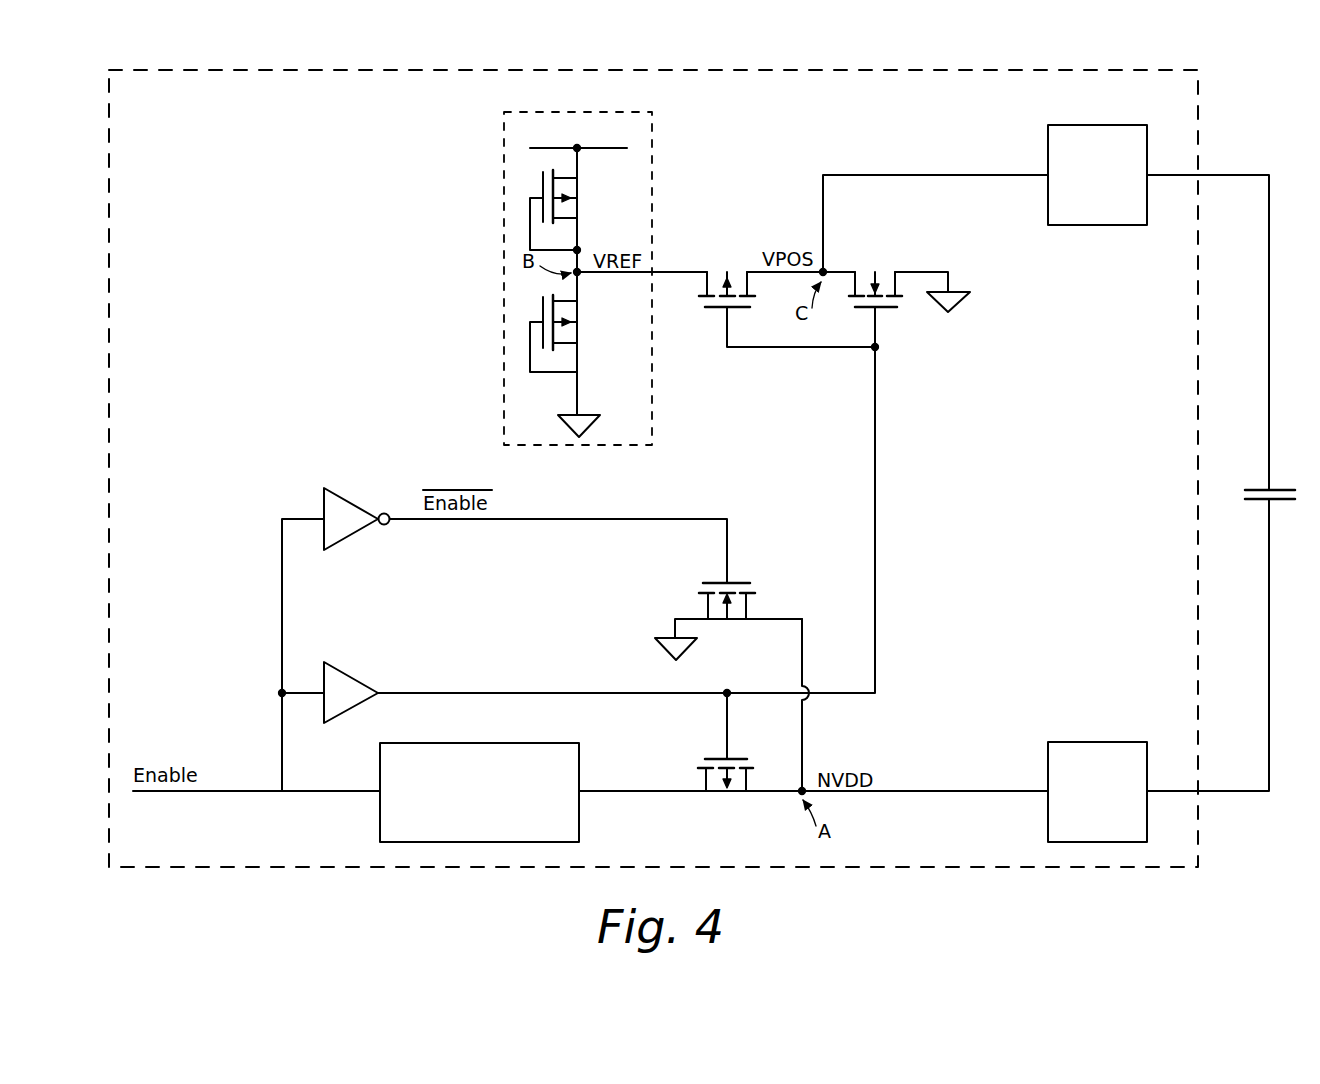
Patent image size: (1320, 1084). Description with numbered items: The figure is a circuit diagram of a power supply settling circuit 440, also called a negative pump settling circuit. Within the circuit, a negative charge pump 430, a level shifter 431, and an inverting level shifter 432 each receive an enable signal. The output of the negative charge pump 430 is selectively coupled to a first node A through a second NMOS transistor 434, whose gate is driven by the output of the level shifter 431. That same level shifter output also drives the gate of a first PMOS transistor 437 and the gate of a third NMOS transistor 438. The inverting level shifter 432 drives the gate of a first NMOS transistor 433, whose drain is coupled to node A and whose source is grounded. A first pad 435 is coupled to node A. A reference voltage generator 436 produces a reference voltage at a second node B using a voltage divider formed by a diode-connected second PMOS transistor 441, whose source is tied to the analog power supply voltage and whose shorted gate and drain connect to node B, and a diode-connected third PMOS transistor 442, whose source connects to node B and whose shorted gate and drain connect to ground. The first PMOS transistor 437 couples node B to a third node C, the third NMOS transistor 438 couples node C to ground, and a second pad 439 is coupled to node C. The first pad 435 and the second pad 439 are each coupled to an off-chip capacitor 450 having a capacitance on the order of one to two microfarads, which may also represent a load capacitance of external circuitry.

The negative charge pump 430 is at (543, 743).
The level shifter 431 is at (365, 675).
The inverting level shifter 432 is at (365, 500).
The first NMOS transistor 433 is at (766, 588).
The second NMOS transistor 434 is at (696, 752).
The first pad 435 is at (1068, 742).
The reference voltage generator 436 is at (573, 265).
The first PMOS transistor 437 is at (706, 313).
The third NMOS transistor 438 is at (905, 314).
The second pad 439 is at (1058, 125).
The power supply settling circuit 440 is at (1172, 70).
The second PMOS transistor 441 is at (536, 164).
The third PMOS transistor 442 is at (531, 298).
The off-chip capacitor 450 is at (1256, 512).